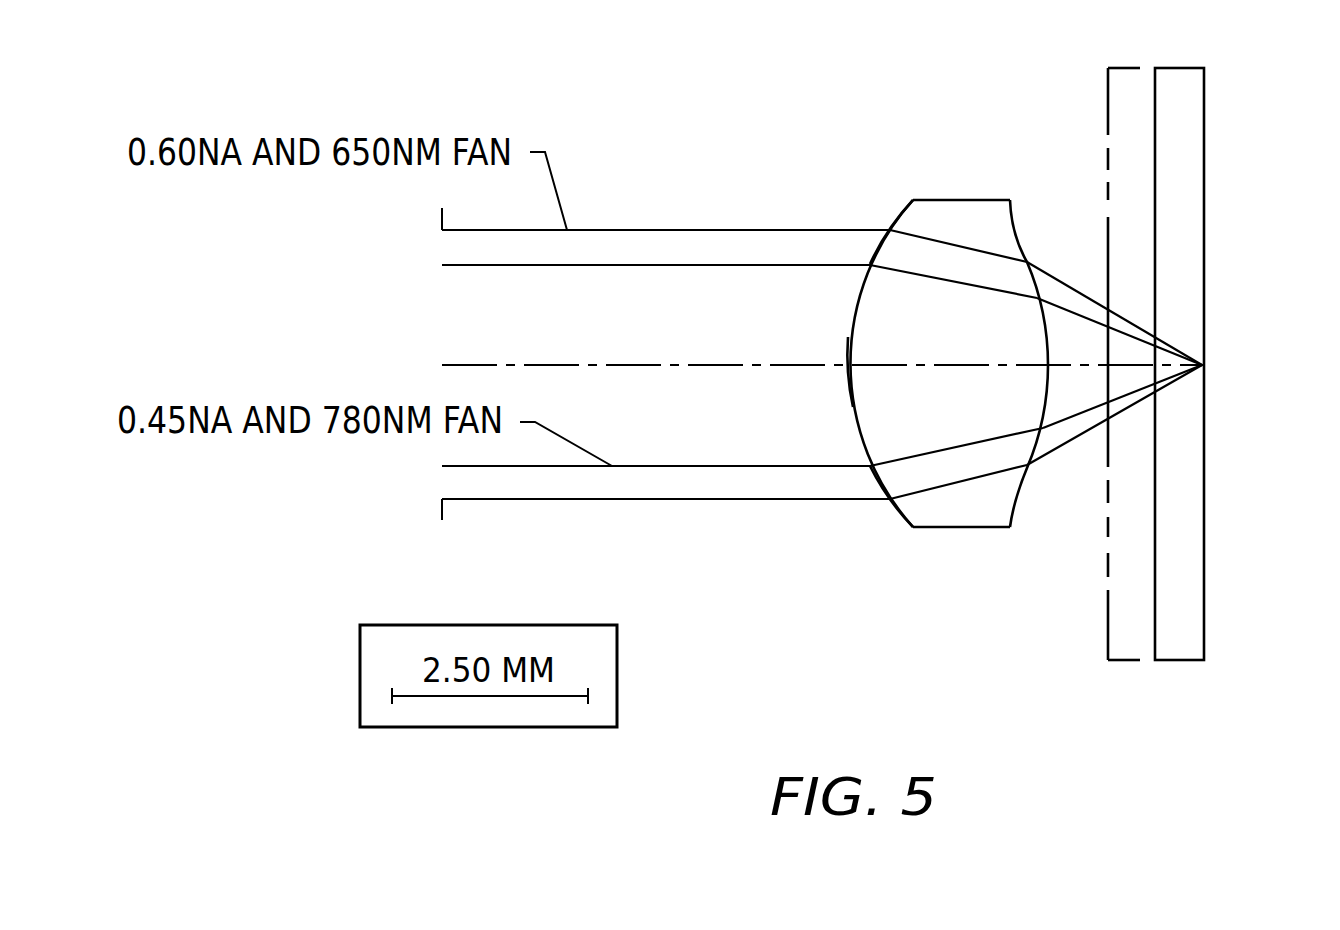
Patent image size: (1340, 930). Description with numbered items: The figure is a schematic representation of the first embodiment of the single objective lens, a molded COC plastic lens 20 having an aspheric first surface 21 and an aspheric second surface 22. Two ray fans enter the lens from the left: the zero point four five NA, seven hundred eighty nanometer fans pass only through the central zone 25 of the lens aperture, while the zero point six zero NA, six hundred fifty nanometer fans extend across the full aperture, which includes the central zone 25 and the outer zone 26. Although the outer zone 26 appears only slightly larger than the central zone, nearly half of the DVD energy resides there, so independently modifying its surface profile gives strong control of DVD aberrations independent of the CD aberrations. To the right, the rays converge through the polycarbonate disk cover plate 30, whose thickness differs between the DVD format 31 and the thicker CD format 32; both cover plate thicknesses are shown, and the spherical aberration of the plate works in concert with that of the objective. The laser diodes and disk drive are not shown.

The plastic lens 20 is at (920, 355).
The aspheric first surface 21 is at (1054, 381).
The aspheric second surface 22 is at (866, 401).
The central zone 25 is at (798, 353).
The outer zone 26 is at (847, 371).
The polycarbonate disk cover plate 30 is at (1178, 385).
The DVD format 31 is at (1179, 391).
The CD format 32 is at (1156, 419).